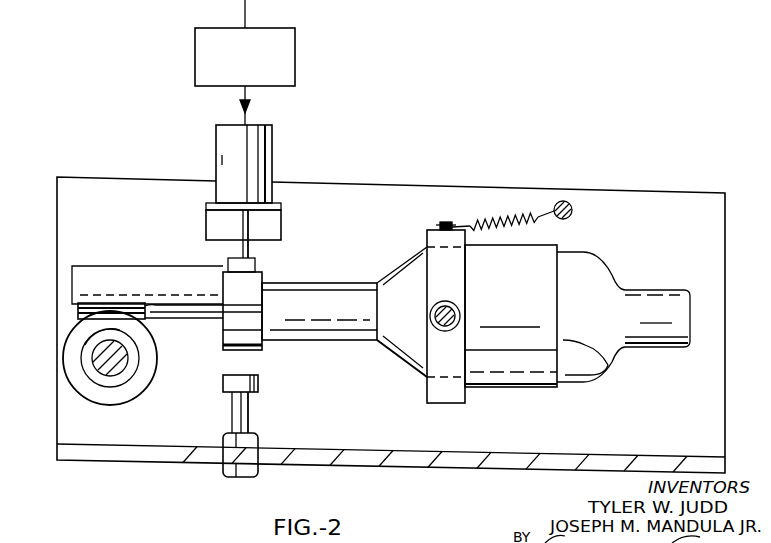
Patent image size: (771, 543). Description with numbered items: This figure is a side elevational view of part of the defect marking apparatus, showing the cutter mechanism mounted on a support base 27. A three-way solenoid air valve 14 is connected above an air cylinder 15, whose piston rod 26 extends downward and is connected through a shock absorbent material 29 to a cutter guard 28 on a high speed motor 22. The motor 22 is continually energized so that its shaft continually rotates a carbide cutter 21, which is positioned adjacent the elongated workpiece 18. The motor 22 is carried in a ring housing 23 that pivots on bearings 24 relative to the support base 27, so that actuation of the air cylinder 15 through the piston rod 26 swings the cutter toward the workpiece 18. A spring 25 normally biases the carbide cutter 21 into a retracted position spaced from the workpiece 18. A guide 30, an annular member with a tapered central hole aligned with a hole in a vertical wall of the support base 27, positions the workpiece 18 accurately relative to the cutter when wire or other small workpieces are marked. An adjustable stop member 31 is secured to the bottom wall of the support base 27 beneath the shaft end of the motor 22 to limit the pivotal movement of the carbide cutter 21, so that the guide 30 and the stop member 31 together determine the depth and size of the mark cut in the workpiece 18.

The three-way solenoid air valve 14 is at (295, 67).
The air cylinder 15 is at (272, 160).
The elongated workpiece 18 is at (104, 362).
The carbide cutter 21 is at (78, 310).
The high speed motor 22 is at (606, 280).
The ring housing 23 is at (440, 402).
The bearings 24 is at (456, 311).
The spring 25 is at (504, 212).
The piston rod 26 is at (249, 243).
The support base 27 is at (147, 179).
The cutter guard 28 is at (176, 253).
The shock absorbent material 29 is at (256, 262).
The guide 30 is at (141, 382).
The adjustable stop member 31 is at (250, 412).